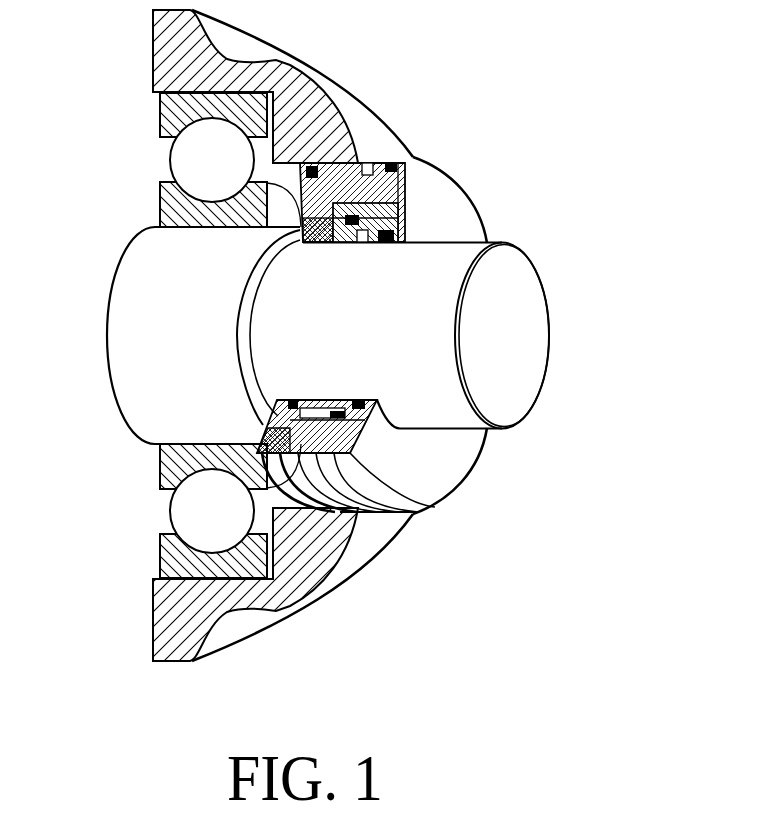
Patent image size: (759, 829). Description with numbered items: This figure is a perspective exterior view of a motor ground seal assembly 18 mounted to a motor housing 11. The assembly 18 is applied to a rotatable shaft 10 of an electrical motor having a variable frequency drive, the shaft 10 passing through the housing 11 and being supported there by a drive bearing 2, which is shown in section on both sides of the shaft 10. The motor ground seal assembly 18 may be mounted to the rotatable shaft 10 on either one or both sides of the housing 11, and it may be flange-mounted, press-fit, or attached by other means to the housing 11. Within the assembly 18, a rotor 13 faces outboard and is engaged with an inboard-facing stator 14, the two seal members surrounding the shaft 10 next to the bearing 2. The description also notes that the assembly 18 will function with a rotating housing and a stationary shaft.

The drive bearing 2 is at (160, 118).
The rotatable shaft 10 is at (550, 355).
The housing 11 is at (368, 575).
The rotor 13 is at (400, 213).
The stator 14 is at (357, 160).
The motor ground seal assembly 18 is at (470, 198).